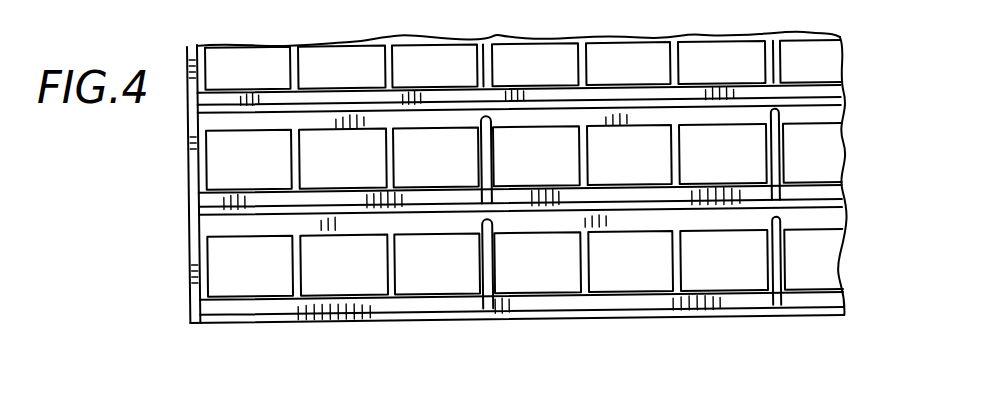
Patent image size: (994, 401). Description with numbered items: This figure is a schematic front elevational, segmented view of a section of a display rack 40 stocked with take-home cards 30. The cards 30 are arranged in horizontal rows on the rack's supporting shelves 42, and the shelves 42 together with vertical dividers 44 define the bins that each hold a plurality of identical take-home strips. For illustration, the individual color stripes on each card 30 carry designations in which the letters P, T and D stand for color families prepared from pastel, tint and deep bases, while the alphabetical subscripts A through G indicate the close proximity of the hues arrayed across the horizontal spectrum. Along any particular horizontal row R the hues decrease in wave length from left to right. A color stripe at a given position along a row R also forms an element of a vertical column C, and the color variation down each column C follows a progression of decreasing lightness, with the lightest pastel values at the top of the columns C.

The take-home card 30 is at (213, 76).
The display rack 40 is at (850, 56).
The shelf 42 is at (835, 307).
The divider 44 is at (780, 118).
The vertical column C is at (329, 31).
The horizontal row R is at (838, 176).